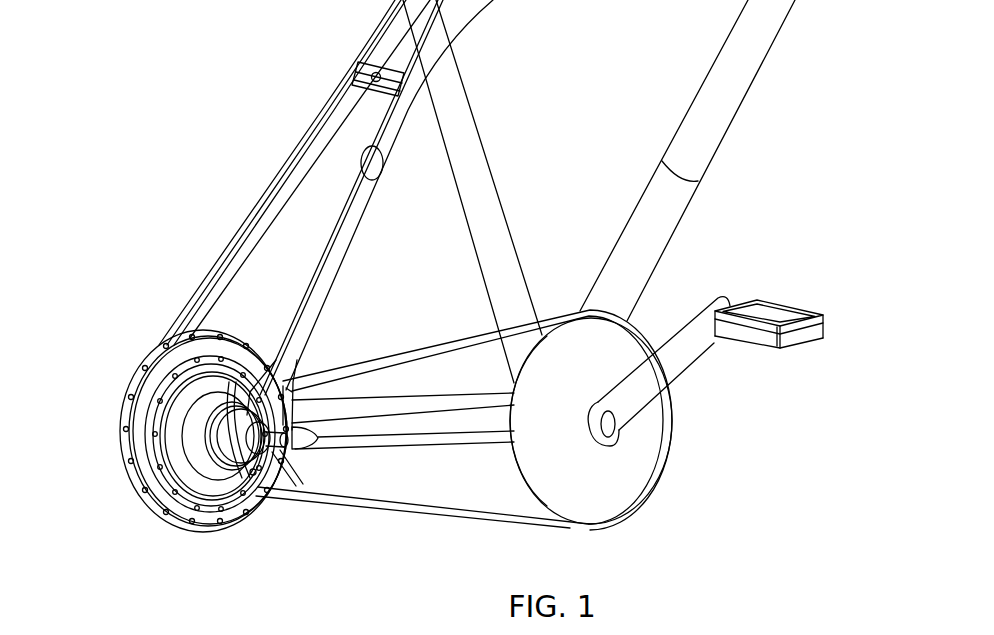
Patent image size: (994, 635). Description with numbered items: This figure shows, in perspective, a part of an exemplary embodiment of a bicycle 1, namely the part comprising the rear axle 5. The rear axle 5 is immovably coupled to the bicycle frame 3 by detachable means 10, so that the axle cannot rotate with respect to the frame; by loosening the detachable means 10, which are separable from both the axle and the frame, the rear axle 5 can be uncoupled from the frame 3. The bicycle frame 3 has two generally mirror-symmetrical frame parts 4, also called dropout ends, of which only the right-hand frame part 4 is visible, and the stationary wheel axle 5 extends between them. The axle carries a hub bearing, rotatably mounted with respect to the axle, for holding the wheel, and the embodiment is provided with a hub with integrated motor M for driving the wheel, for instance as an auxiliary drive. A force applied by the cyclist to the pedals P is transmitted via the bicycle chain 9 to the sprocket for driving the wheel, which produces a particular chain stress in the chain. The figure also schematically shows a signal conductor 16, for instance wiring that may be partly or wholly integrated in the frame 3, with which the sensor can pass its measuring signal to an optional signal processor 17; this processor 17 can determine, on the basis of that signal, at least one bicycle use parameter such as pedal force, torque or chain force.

The bicycle 1 is at (272, 76).
The bicycle frame 3 is at (252, 173).
The frame part (dropout end) 4 is at (253, 418).
The rear axle 5 is at (282, 456).
The bicycle chain 9 is at (378, 503).
The detachable means (coupling element / washer) 10 is at (268, 446).
The signal conductor 16 is at (287, 375).
The signal processor 17 is at (372, 170).
The hub motor M is at (172, 364).
The pedals P is at (780, 315).